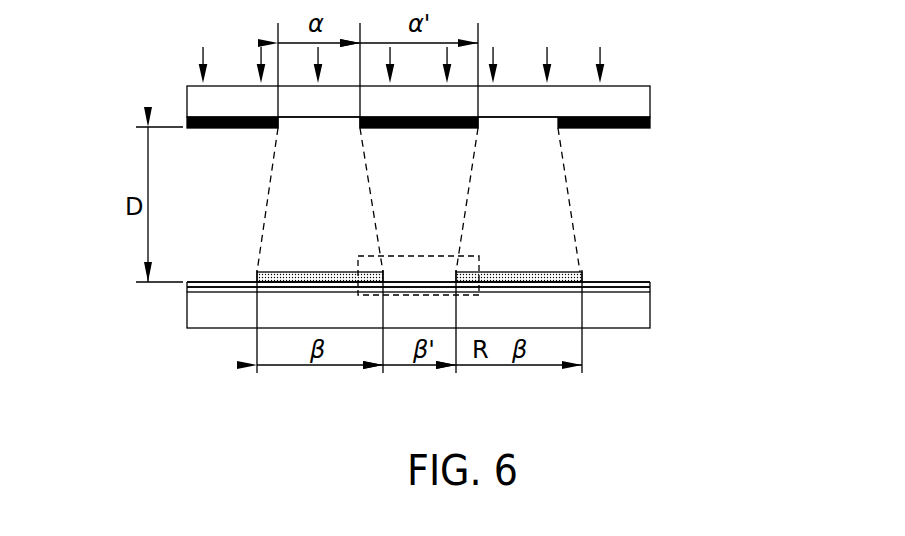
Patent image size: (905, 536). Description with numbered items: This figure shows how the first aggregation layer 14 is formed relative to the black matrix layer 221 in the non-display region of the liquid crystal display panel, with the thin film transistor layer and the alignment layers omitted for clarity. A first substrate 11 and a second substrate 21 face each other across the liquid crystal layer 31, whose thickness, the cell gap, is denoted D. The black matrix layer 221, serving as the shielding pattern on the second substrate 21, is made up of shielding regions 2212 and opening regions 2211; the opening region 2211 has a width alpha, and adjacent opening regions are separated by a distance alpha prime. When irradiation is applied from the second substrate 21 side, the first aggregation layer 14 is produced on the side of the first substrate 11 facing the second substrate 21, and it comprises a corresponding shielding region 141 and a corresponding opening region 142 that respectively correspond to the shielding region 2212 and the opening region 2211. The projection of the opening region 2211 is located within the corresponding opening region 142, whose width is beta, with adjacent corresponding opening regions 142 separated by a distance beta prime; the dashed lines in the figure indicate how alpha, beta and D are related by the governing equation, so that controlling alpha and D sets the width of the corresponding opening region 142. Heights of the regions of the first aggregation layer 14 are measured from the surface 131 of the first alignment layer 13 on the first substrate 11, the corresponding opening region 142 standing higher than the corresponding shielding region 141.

The first substrate 11 is at (645, 305).
The first alignment layer 13 is at (188, 290).
The surface of first alignment layer 131 is at (208, 282).
The first aggregation layer 14 is at (480, 269).
The corresponding shielding region 141 is at (650, 283).
The corresponding opening region 142 is at (550, 278).
The second substrate 21 is at (647, 103).
The black matrix layer 221 is at (492, 139).
The opening region 2211 is at (543, 119).
The shielding region 2212 is at (652, 122).
The liquid crystal layer 31 is at (625, 193).